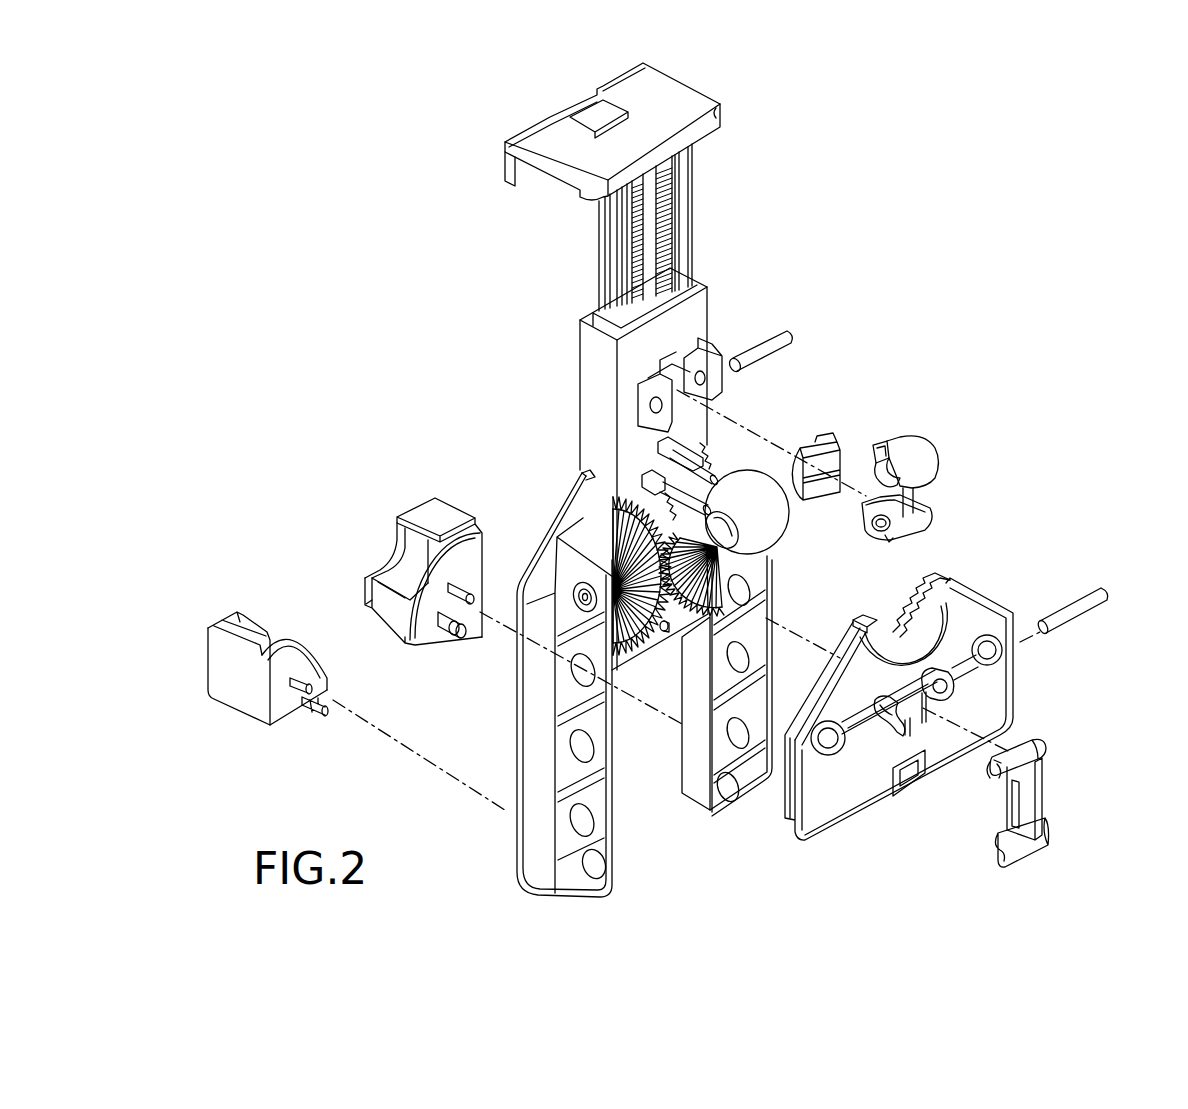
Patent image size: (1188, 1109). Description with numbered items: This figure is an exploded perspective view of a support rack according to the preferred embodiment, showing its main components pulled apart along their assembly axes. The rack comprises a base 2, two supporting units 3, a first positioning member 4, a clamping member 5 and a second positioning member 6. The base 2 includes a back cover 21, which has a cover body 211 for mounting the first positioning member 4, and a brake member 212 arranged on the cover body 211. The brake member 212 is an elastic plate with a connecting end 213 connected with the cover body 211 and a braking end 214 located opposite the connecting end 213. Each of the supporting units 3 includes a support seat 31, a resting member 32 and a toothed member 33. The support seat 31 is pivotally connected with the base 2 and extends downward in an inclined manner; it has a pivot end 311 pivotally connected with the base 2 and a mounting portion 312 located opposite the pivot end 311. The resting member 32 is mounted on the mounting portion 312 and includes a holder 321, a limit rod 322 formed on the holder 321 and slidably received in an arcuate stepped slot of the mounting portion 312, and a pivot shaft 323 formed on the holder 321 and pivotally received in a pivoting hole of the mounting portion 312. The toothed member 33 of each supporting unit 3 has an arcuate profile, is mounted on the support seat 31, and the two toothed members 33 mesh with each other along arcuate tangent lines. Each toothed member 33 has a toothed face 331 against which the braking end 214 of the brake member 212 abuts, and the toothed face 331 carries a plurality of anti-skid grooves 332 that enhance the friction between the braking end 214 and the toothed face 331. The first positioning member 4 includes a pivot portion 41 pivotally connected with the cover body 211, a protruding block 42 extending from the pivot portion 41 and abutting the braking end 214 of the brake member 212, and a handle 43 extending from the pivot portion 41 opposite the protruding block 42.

The base 2 is at (555, 335).
The back cover 21 is at (946, 714).
The cover body 211 is at (822, 812).
The brake member 212 is at (935, 705).
The connecting end 213 is at (912, 745).
The braking end 214 is at (886, 735).
The supporting unit 3 is at (610, 689).
The support seat 31 is at (608, 683).
The pivot end 311 is at (545, 548).
The mounting portion 312 is at (570, 876).
The resting member 32 is at (311, 618).
The holder 321 is at (420, 615).
The limit rod 322 is at (463, 590).
The pivot shaft 323 is at (446, 635).
The toothed member 33 is at (609, 537).
The toothed face 331 is at (748, 562).
The anti-skid grooves 332 is at (748, 596).
The first positioning member 4 is at (1045, 798).
The pivot portion 41 is at (1048, 754).
The protruding block 42 is at (988, 790).
The handle 43 is at (1030, 822).
The clamping member 5 is at (708, 186).
The second positioning member 6 is at (948, 448).